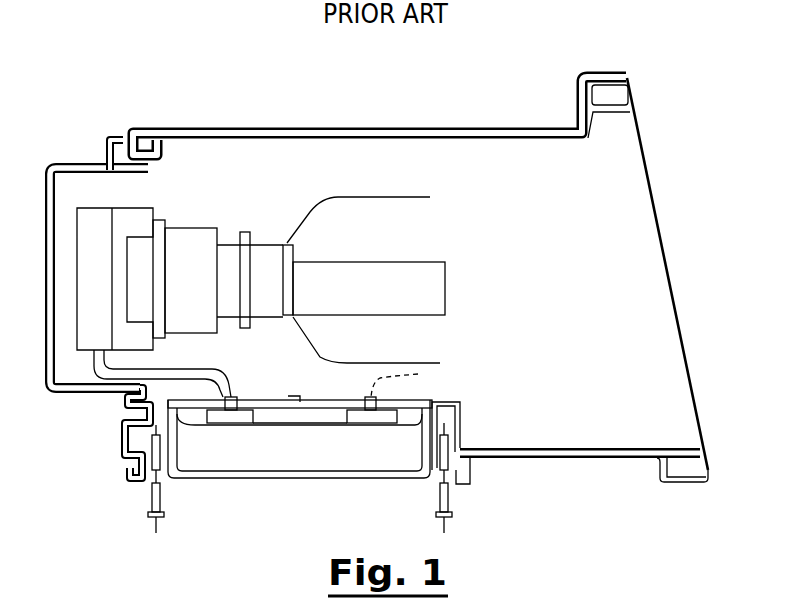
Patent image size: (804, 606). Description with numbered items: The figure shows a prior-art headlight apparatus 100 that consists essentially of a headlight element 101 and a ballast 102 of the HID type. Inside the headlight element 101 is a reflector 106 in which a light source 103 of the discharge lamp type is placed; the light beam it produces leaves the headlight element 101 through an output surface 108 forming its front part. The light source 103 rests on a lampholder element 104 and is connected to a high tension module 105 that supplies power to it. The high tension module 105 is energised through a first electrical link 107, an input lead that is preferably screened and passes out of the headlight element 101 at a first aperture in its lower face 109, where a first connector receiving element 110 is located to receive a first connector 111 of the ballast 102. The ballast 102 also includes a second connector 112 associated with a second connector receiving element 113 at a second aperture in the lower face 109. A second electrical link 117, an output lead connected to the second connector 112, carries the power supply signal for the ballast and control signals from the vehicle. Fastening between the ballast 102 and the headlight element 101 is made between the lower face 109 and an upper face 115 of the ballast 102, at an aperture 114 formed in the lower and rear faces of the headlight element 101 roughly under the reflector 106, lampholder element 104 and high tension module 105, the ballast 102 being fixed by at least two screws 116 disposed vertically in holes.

The headlight apparatus 100 is at (73, 138).
The headlight element 101 is at (367, 129).
The ballast 102 is at (318, 460).
The light source 103 is at (413, 261).
The lampholder element 104 is at (266, 207).
The high tension module 105 is at (153, 207).
The reflector 106 is at (387, 196).
The first electrical link 107 is at (162, 369).
The output surface 108 is at (665, 255).
The lower face 109 is at (292, 398).
The first connector receiving element 110 is at (237, 399).
The first connector 111 is at (228, 416).
The second connector 112 is at (372, 418).
The second connector receiving element 113 is at (364, 399).
The aperture 114 is at (310, 420).
The upper face 115 is at (282, 426).
The screws 116 is at (148, 504).
The second electrical link 117 is at (418, 374).